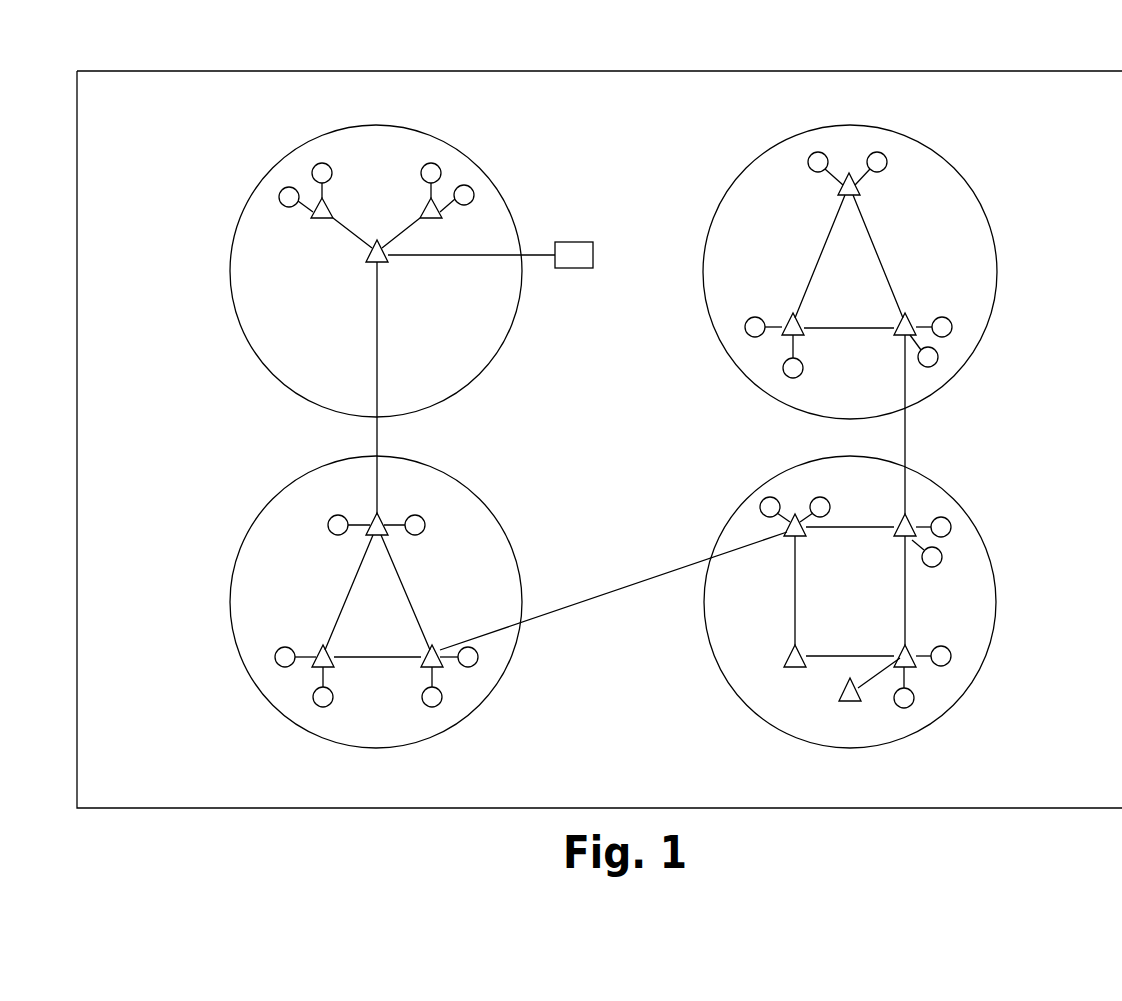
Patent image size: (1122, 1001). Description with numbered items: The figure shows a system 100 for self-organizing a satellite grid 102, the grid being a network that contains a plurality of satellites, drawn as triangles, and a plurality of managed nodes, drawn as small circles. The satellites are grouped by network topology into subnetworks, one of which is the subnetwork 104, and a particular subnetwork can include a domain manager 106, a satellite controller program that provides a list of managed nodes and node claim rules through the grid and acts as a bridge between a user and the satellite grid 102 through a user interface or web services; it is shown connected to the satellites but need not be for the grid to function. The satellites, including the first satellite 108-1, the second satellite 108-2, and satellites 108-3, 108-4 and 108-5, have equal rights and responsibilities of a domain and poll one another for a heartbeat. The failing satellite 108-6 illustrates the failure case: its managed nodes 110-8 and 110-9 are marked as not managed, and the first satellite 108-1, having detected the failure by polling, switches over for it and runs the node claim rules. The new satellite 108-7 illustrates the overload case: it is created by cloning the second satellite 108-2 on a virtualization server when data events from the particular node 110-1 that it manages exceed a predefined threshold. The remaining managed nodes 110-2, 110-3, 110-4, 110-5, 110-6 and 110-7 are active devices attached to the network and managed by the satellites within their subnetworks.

The system 100 is at (141, 54).
The satellite grid 102 is at (730, 71).
The subnetwork 104 is at (257, 190).
The domain manager 106 is at (574, 242).
The first satellite 108-1 is at (790, 668).
The second satellite 108-2 is at (912, 670).
The satellite 108-3 is at (915, 318).
The satellite 108-4 is at (860, 191).
The satellite 108-5 is at (790, 337).
The failing satellite 108-6 is at (318, 668).
The new satellite 108-7 is at (845, 703).
The managed node 110-1 is at (951, 656).
The managed node 110-2 is at (936, 364).
The managed node 110-3 is at (947, 337).
The managed node 110-4 is at (882, 152).
The managed node 110-5 is at (818, 152).
The managed node 110-6 is at (745, 327).
The managed node 110-7 is at (785, 376).
The managed node 110-8 is at (275, 657).
The managed node 110-9 is at (315, 703).